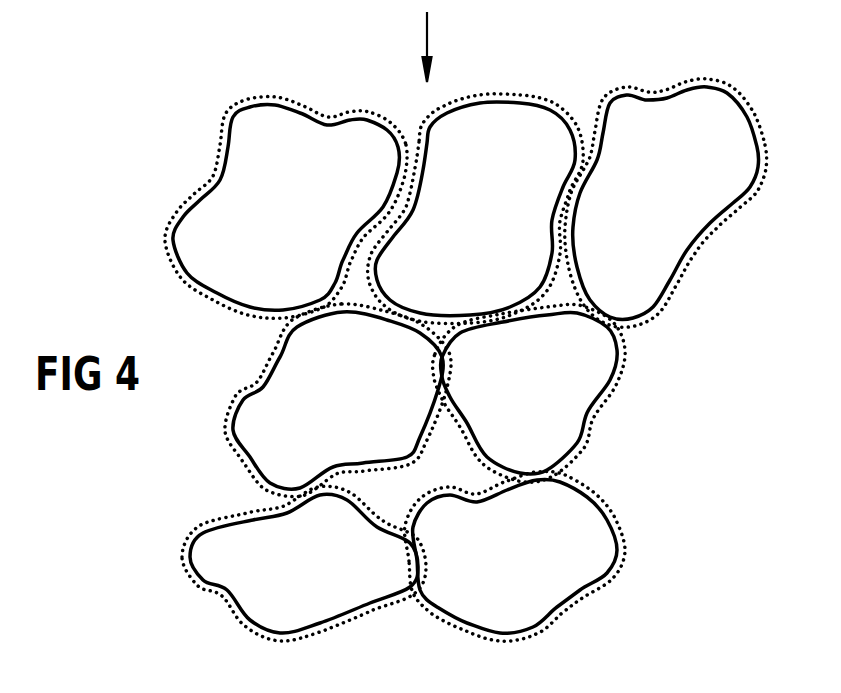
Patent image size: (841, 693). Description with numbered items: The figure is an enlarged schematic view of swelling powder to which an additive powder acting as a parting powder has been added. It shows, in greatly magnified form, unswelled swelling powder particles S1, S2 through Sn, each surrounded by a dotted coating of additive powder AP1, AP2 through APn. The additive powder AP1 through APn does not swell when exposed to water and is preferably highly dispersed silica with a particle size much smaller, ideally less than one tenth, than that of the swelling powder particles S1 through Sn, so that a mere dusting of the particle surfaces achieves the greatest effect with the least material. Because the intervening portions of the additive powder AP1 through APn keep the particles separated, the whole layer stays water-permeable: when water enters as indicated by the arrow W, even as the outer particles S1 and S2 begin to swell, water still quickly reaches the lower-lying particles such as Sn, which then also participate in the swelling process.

The arrow indicating water incursion W is at (426, 31).
The swelling powder particle S1 is at (232, 192).
The additive powder AP1 is at (237, 115).
The swelling powder particle S2 is at (497, 120).
The additive powder AP2 is at (540, 107).
The swelling powder particle Sn is at (587, 560).
The additive powder APn is at (573, 600).